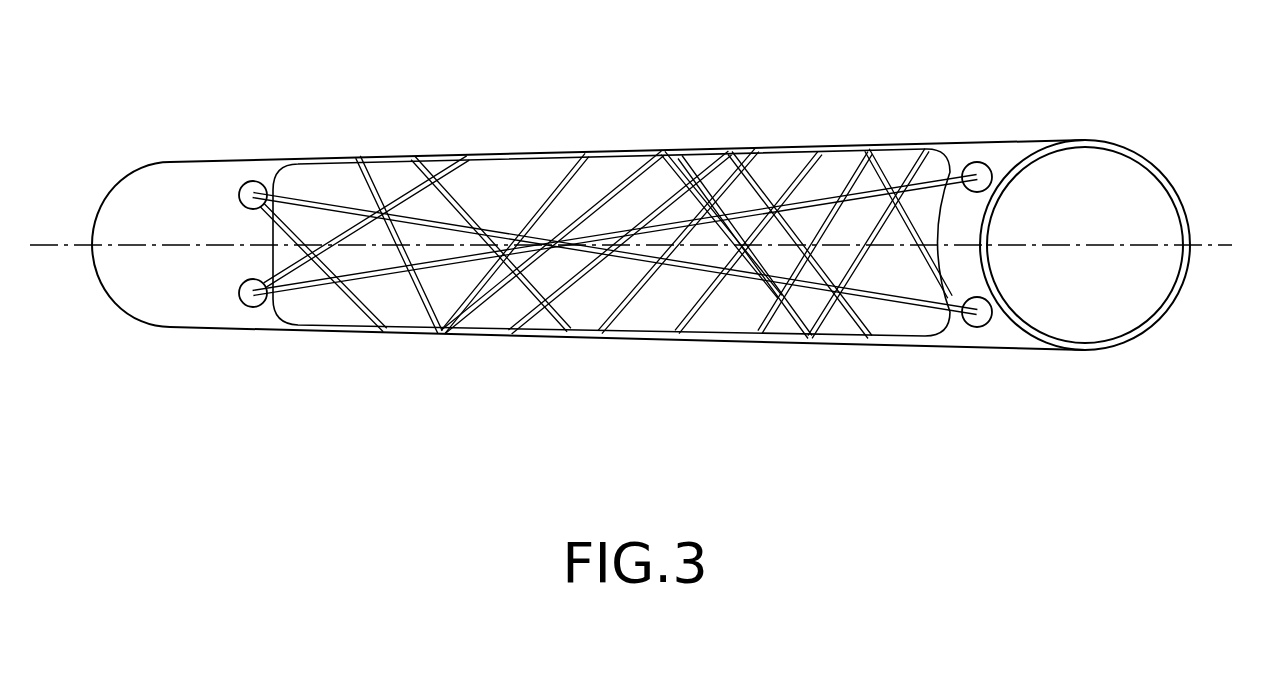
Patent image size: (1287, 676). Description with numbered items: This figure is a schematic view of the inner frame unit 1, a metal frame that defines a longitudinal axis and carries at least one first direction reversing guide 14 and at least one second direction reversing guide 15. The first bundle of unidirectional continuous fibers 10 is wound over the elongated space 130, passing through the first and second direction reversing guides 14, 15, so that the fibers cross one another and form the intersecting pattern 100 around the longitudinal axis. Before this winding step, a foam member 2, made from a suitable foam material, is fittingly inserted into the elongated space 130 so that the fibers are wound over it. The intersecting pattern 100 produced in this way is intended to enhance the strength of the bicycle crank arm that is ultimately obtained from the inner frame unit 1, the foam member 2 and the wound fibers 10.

The inner frame unit 1 is at (1035, 362).
The foam member 2 is at (487, 322).
The first bundle of unidirectional continuous fibers 10 is at (793, 158).
The first direction reversing guide 14 is at (977, 162).
The second direction reversing guide 15 is at (253, 181).
The intersecting pattern 100 is at (682, 131).
The elongated space 130 is at (673, 293).